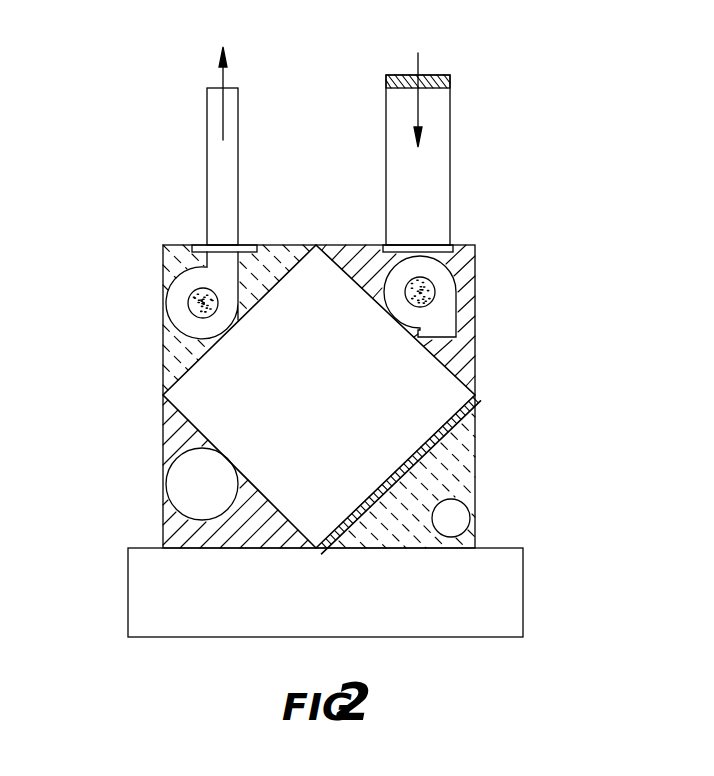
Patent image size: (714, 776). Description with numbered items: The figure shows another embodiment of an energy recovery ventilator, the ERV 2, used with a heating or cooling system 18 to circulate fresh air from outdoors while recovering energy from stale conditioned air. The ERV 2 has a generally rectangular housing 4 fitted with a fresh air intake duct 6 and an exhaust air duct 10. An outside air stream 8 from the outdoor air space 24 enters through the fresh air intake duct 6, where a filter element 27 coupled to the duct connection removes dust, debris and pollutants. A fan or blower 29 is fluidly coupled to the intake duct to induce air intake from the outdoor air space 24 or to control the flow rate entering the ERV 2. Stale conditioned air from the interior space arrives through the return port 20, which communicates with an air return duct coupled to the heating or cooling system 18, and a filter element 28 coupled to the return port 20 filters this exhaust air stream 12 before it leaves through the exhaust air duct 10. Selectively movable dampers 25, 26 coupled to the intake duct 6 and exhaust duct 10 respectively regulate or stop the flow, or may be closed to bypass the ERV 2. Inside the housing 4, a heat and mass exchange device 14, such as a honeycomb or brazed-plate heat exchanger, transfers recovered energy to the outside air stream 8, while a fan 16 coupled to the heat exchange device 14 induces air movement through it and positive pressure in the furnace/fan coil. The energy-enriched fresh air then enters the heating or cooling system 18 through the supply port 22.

The ERV 2 is at (512, 313).
The housing 4 is at (165, 428).
The fresh air intake duct 6 is at (450, 152).
The outside air stream 8 is at (418, 68).
The exhaust air duct 10 is at (207, 145).
The exhaust air stream 12 is at (213, 73).
The heat and mass exchange device 14 is at (443, 393).
The fan 16 is at (188, 302).
The heating or cooling system 18 is at (113, 555).
The return port 20 is at (457, 518).
The supply port 22 is at (177, 488).
The outdoor air space 24 is at (312, 71).
The damper 25 is at (200, 245).
The damper 26 is at (453, 243).
The filter element 27 is at (450, 80).
The filter element 28 is at (447, 425).
The fan or blower 29 is at (472, 290).